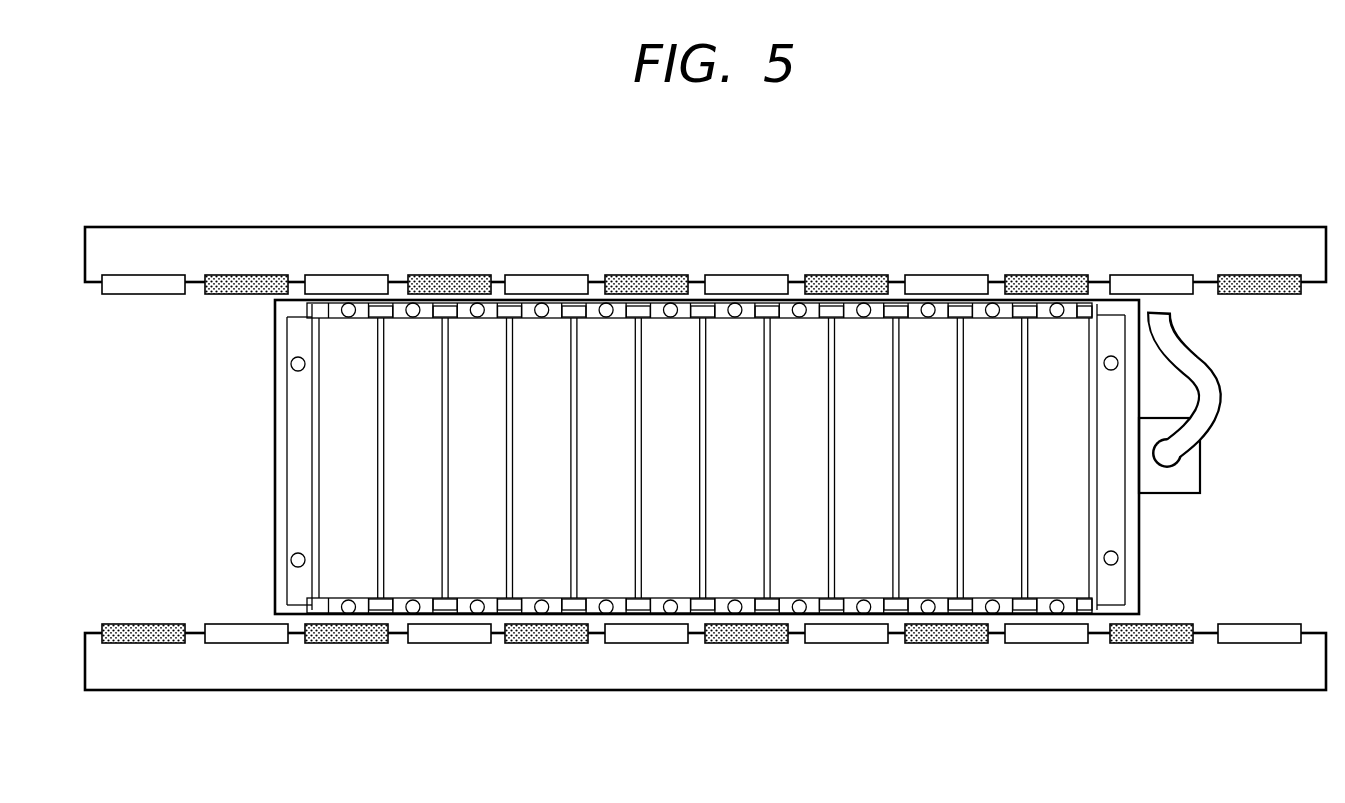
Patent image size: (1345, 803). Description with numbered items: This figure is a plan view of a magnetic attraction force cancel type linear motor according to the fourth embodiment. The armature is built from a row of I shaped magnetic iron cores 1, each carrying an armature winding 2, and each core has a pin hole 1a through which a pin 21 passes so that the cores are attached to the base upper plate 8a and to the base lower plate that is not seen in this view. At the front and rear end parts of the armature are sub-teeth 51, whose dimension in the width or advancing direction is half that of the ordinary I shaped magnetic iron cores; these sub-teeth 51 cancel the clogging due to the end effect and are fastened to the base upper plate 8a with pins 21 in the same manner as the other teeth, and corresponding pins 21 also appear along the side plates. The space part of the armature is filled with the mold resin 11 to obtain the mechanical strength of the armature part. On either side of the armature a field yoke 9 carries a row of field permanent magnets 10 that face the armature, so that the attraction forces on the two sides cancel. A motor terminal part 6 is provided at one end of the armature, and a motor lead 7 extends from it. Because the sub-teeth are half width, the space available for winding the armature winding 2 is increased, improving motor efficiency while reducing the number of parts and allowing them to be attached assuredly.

The I shaped magnetic iron core 1 is at (1068, 303).
The pin hole 1a is at (1052, 302).
The armature winding 2 is at (417, 345).
The motor terminal part 6 is at (1188, 472).
The motor lead 7 is at (1220, 368).
The base upper plate 8a is at (546, 350).
The field yoke 9 is at (832, 227).
The field permanent magnet 10 is at (655, 276).
The mold resin 11 is at (393, 617).
The pin 21 is at (348, 302).
The sub-teeth 51 is at (297, 445).